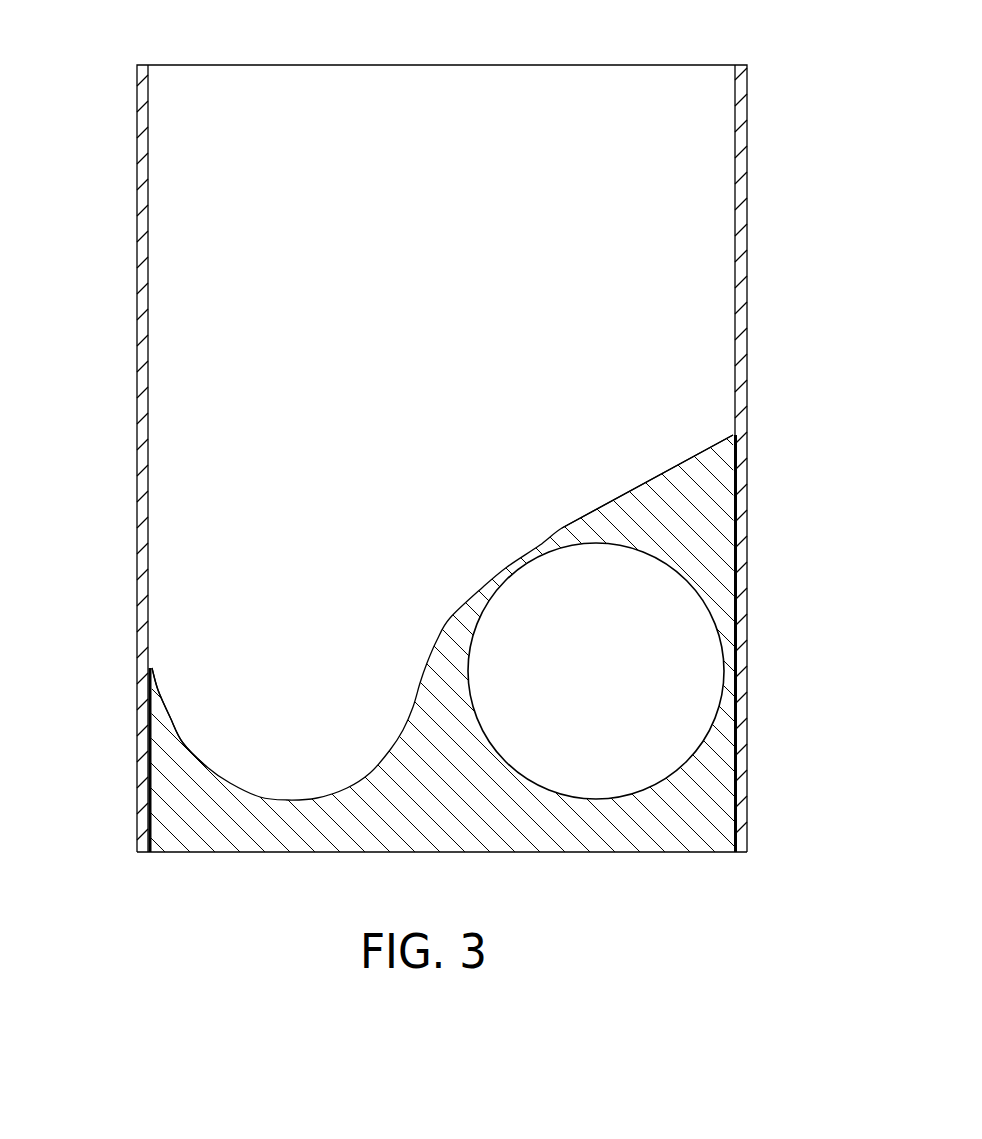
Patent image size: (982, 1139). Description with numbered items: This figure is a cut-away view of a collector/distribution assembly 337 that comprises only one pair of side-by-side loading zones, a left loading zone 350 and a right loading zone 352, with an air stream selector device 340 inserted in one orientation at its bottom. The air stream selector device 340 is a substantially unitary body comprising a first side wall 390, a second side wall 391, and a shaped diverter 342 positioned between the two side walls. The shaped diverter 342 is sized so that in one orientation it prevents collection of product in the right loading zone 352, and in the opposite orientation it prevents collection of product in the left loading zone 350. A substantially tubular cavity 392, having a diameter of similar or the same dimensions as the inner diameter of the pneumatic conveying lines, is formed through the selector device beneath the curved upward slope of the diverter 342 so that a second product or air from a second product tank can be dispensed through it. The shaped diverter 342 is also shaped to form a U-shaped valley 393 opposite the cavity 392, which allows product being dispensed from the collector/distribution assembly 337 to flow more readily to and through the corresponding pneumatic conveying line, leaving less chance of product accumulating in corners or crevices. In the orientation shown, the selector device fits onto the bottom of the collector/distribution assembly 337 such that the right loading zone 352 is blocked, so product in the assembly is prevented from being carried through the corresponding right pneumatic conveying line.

The collector/distribution assembly 337 is at (581, 63).
The air stream selector device 340 is at (522, 821).
The shaped diverter 342 is at (630, 490).
The left loading zone 350 is at (272, 518).
The right loading zone 352 is at (568, 510).
The first side wall 390 is at (150, 793).
The second side wall 391 is at (737, 747).
The tubular cavity 392 is at (670, 688).
The U-shaped valley 393 is at (180, 743).